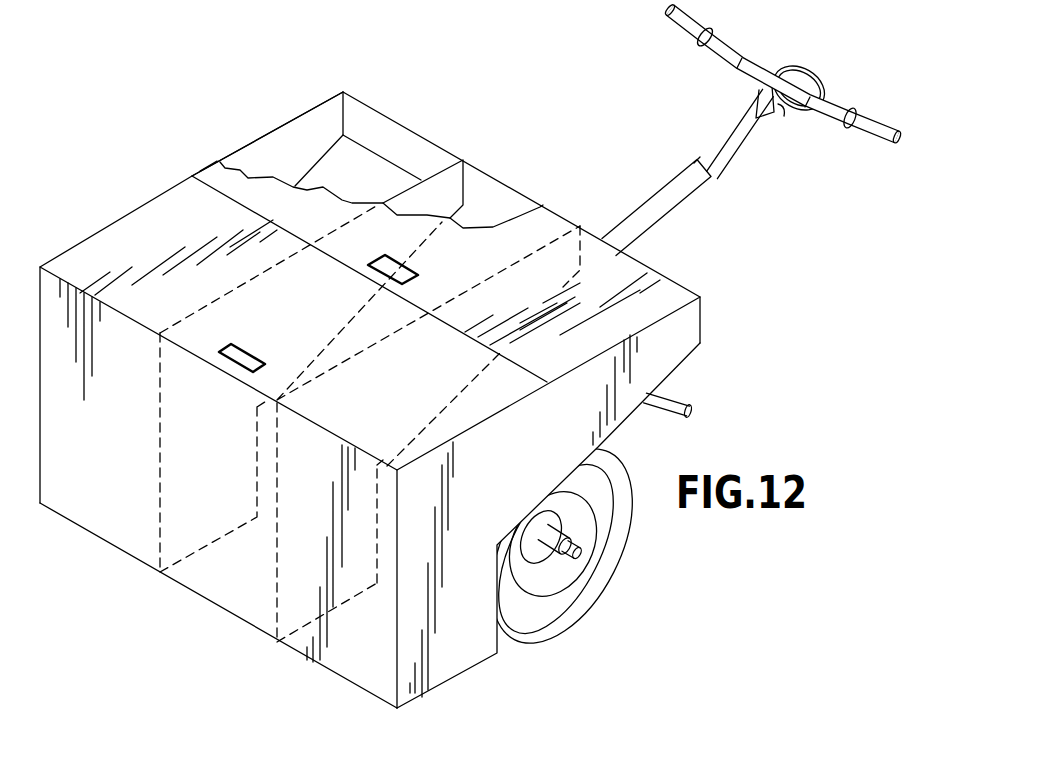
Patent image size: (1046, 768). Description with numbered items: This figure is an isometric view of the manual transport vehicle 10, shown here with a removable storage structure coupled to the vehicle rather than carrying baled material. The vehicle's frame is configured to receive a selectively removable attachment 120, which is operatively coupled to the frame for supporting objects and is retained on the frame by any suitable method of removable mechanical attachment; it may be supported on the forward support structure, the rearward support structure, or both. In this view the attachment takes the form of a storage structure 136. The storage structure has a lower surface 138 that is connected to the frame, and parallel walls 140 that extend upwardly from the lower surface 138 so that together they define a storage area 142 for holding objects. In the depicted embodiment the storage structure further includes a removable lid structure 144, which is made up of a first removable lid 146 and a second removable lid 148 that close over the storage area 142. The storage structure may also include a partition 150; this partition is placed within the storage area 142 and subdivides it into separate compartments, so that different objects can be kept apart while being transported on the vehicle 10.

The manual transport vehicle 10 is at (747, 199).
The selectively removable attachment 120 is at (157, 596).
The storage structure 136 is at (83, 536).
The lower surface 138 is at (365, 160).
The parallel walls 140 is at (122, 432).
The storage area 142 is at (298, 134).
The removable lid structure 144 is at (186, 170).
The first removable lid 146 is at (125, 217).
The second removable lid 148 is at (205, 163).
The partition 150 is at (440, 168).